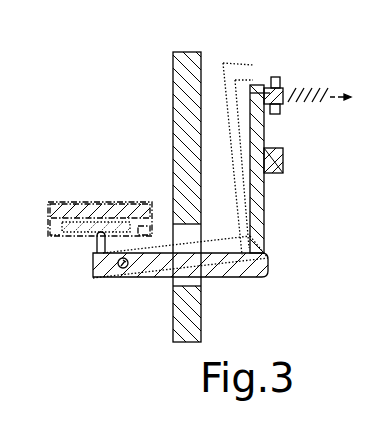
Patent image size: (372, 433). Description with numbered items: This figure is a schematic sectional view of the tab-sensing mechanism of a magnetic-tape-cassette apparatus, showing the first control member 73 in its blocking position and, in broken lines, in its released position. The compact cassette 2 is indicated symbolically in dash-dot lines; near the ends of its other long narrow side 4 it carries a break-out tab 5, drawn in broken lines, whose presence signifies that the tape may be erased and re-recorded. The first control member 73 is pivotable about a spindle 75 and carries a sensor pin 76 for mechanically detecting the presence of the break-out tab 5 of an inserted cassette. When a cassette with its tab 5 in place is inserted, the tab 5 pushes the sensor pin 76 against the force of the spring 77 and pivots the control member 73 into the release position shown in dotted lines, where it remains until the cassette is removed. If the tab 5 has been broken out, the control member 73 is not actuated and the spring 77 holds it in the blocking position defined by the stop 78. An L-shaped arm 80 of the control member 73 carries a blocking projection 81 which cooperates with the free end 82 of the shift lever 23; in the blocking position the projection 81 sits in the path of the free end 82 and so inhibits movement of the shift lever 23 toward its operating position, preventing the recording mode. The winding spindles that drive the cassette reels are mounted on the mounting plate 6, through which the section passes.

The compact cassette 2 is at (65, 202).
The other long narrow side 4 is at (55, 242).
The break-out tab 5 is at (83, 237).
The mounting plate 6 is at (183, 95).
The shift lever 23 is at (279, 71).
The first control member 73 is at (216, 278).
The spindle 75 is at (122, 269).
The sensor pin 76 is at (99, 240).
The spring 77 is at (309, 92).
The stop 78 is at (283, 160).
The L-shaped arm 80 is at (262, 180).
The blocking projection 81 is at (250, 66).
The free end 82 is at (280, 108).